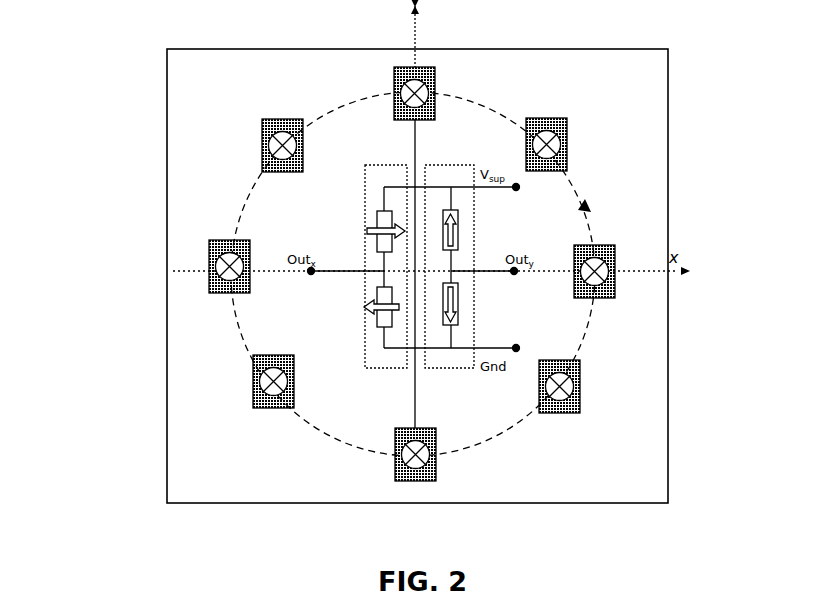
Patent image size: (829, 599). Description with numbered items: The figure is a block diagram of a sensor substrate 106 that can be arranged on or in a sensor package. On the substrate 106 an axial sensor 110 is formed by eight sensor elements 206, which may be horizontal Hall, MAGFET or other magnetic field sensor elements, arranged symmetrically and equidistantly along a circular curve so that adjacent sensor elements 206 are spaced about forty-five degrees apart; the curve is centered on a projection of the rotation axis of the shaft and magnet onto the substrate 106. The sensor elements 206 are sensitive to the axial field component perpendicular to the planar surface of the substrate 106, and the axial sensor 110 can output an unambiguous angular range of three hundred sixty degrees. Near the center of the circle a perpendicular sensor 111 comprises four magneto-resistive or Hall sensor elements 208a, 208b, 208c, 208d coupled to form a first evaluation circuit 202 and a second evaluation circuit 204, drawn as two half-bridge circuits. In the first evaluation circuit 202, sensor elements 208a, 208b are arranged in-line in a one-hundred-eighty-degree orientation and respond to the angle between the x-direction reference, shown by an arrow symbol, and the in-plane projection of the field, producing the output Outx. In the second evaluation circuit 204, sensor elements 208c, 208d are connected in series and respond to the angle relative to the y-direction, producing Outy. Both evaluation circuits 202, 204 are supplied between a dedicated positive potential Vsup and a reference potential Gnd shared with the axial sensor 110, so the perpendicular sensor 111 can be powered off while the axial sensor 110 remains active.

The sensor substrate 106 is at (676, 476).
The axial sensor 110 is at (492, 83).
The perpendicular sensor 111 is at (398, 153).
The first evaluation circuit 202 is at (232, 320).
The second evaluation circuit 204 is at (576, 318).
The sensor elements 206 is at (567, 120).
The sensor element 208a is at (368, 227).
The sensor element 208b is at (370, 313).
The sensor element 208c is at (585, 218).
The sensor element 208d is at (582, 317).